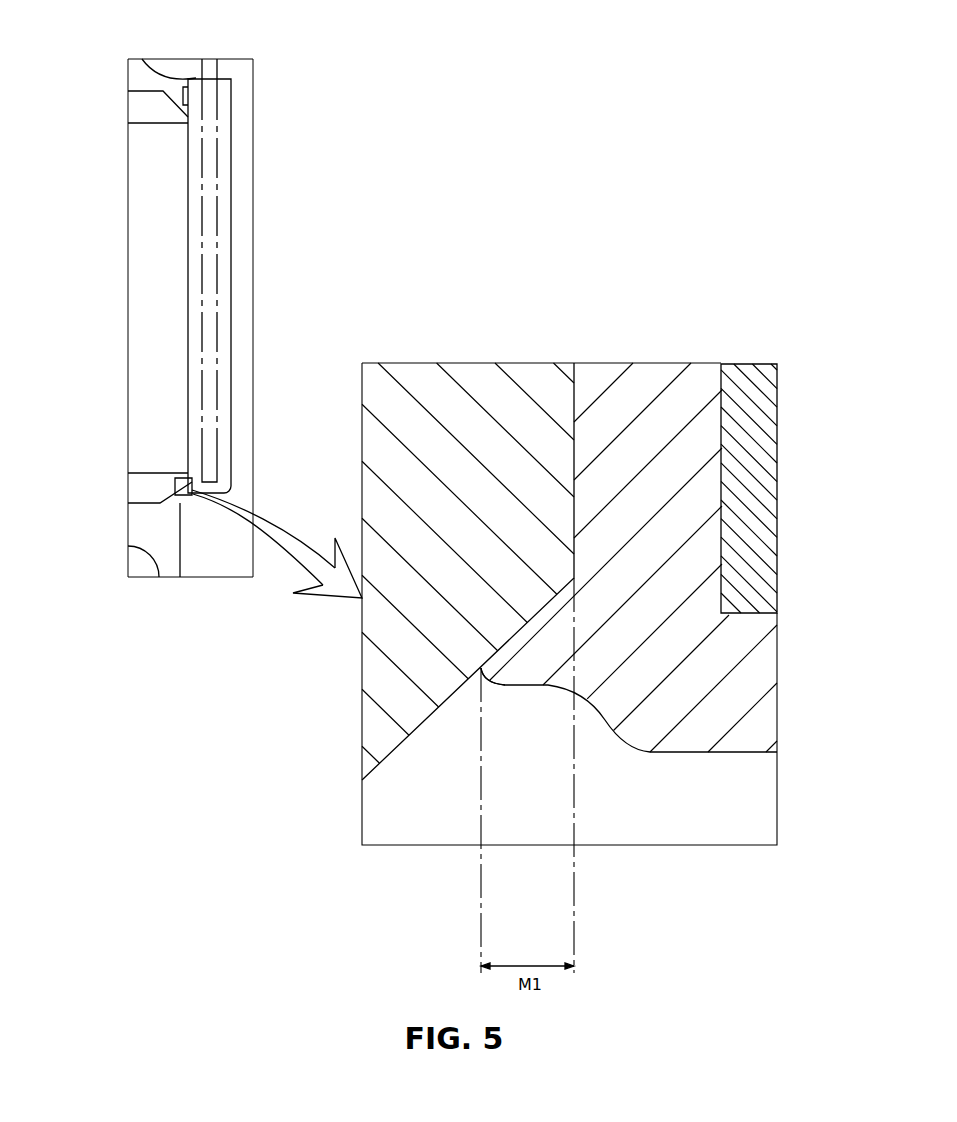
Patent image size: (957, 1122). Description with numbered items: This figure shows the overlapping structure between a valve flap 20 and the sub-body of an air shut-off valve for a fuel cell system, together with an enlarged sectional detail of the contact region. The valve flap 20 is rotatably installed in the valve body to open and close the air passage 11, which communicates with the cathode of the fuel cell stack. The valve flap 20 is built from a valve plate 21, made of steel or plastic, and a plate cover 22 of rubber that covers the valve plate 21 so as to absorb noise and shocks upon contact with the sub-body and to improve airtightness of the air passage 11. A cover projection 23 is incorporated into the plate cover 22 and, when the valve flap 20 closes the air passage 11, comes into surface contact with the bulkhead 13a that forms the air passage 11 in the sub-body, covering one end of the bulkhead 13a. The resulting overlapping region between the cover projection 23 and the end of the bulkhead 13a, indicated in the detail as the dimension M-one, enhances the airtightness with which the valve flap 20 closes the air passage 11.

The air passage 11 is at (152, 270).
The bulkhead 13a is at (143, 107).
The valve flap 20 is at (233, 138).
The valve plate 21 is at (212, 190).
The plate cover 22 is at (224, 234).
The cover projection 23 is at (183, 102).